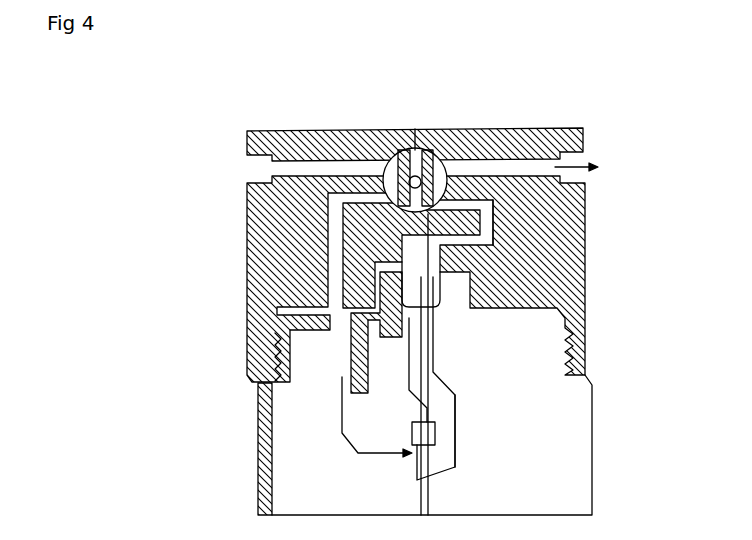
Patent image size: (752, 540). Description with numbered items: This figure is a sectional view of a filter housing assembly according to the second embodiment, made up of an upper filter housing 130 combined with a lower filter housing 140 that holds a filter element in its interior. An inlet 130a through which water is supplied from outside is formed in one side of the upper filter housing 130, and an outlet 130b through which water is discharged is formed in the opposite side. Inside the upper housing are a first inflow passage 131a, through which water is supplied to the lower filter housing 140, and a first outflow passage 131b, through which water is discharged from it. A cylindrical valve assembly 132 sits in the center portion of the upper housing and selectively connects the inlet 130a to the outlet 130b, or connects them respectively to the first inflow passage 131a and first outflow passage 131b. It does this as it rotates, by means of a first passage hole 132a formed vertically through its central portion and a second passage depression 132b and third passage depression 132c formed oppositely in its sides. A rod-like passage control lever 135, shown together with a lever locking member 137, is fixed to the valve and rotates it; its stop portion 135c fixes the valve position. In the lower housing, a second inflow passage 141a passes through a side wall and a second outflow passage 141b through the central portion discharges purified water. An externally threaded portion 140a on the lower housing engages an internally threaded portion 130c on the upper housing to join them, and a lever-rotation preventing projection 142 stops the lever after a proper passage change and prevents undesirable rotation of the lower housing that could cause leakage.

The upper filter housing 130 is at (558, 117).
The inlet 130a is at (257, 168).
The outlet 130b is at (585, 157).
The internally threaded portion 130c is at (253, 345).
The first inflow passage 131a is at (333, 227).
The first outflow passage 131b is at (493, 223).
The valve assembly 132 is at (415, 126).
The first passage hole 132a is at (423, 138).
The second passage depression 132b is at (352, 132).
The third passage depression 132c is at (445, 178).
The passage control lever 135 is at (476, 391).
The stop portion 135c is at (455, 452).
The lever locking member 137 is at (397, 242).
The lower filter housing 140 is at (258, 478).
The externally threaded portion 140a is at (292, 367).
The second inflow passage 141a is at (340, 330).
The second outflow passage 141b is at (417, 285).
The lever-rotation preventing projection 142 is at (432, 428).